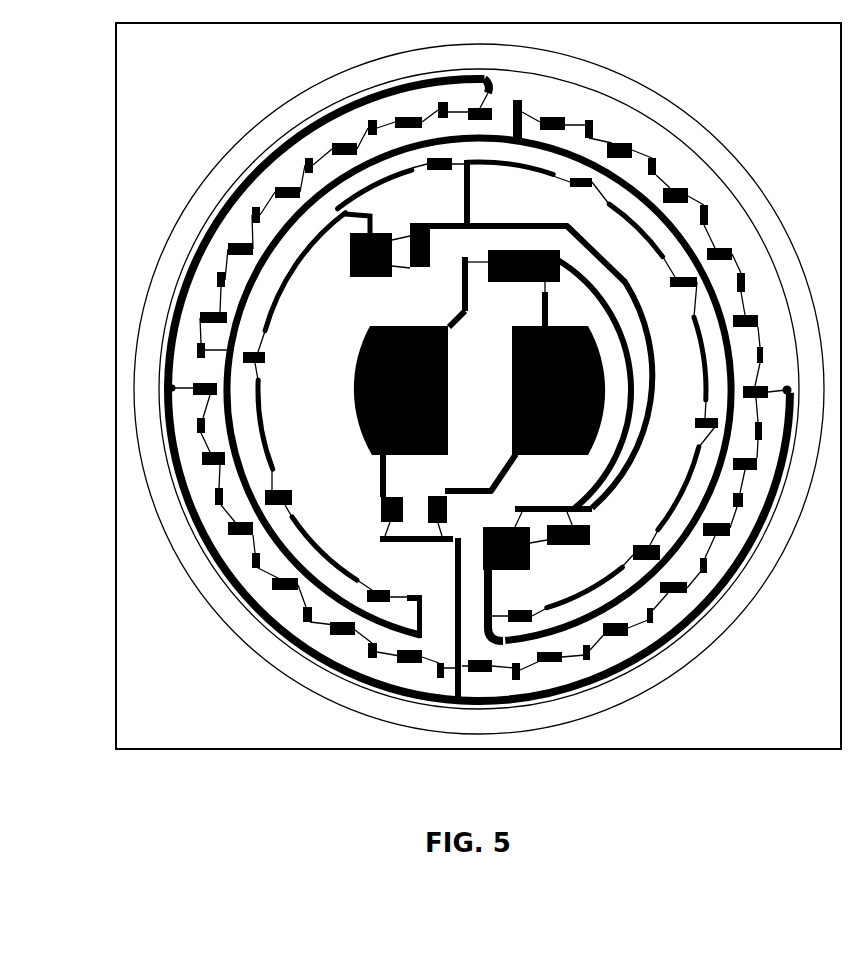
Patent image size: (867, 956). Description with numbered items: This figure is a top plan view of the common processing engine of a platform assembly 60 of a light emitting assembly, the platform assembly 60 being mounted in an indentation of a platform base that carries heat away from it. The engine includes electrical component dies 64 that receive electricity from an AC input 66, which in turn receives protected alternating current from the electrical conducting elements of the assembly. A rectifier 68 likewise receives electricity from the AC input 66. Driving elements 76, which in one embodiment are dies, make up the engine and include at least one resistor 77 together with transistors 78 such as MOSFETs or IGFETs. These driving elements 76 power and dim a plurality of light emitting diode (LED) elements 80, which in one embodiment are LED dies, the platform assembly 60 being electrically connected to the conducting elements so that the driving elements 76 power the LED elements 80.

The platform assembly 60 is at (102, 393).
The electrical component dies 64 is at (247, 121).
The AC input 66 is at (448, 348).
The rectifier 68 is at (539, 289).
The driving elements 76 is at (438, 274).
The resistor 77 is at (430, 238).
The transistors 78 is at (350, 262).
The light emitting diode (LED) elements 80 is at (553, 117).